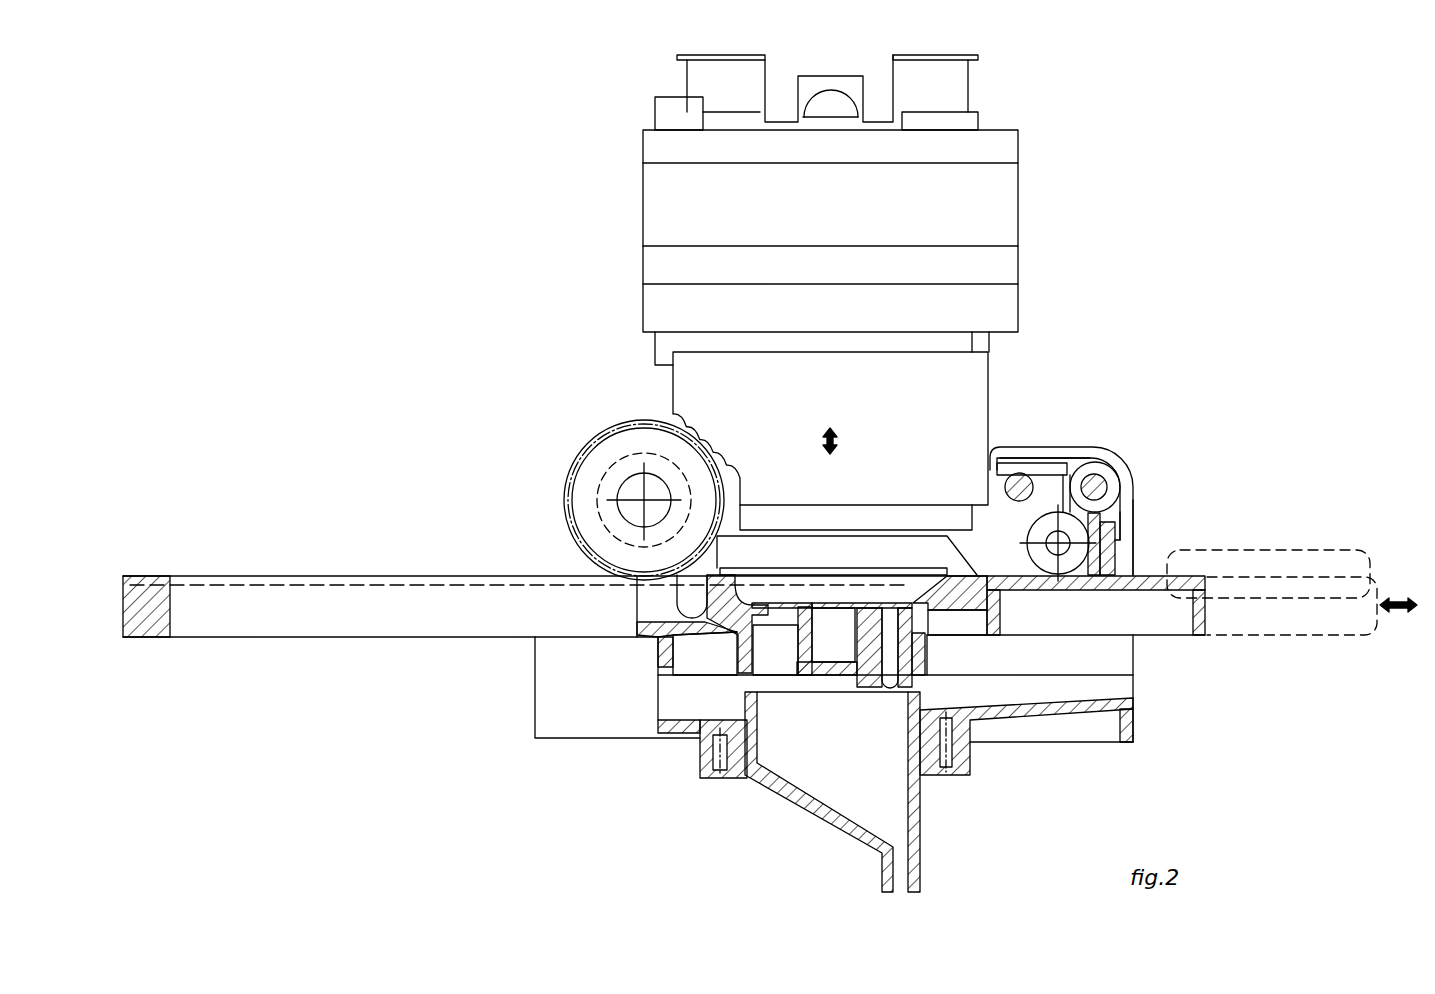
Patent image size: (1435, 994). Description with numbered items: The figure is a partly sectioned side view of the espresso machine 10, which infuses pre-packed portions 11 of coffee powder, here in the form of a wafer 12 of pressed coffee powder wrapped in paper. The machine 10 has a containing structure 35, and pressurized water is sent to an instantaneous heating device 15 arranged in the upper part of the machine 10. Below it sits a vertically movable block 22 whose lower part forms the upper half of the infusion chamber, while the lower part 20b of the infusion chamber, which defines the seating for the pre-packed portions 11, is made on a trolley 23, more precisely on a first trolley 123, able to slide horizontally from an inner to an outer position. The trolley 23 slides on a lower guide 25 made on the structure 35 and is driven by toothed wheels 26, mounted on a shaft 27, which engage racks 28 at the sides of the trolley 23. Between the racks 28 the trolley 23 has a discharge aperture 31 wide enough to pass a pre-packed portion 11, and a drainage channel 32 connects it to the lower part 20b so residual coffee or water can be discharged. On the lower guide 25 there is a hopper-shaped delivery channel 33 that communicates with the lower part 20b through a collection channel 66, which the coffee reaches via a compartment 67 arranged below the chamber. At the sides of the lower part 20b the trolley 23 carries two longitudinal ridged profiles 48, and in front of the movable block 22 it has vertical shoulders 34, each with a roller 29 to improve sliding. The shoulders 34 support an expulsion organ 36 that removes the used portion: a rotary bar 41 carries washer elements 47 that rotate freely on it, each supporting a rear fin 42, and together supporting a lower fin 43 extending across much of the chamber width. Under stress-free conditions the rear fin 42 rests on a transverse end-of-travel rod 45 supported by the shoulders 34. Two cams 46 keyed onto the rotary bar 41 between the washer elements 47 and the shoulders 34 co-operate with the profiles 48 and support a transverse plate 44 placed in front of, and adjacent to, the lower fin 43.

The machine 10 is at (1095, 266).
The instantaneous heating device 15 is at (665, 199).
The containing structure 35 is at (552, 336).
The vertically movable block 22 is at (968, 373).
The toothed wheels 26 is at (621, 428).
The shaft 27 is at (625, 505).
The longitudinal ridged profiles 48 is at (850, 543).
The lower part of the infusion chamber 20b is at (878, 576).
The expulsion organ 36 is at (1088, 447).
The washer elements 47 is at (1062, 456).
The rear fin 42 is at (1031, 465).
The transverse end-of-travel rod 45 is at (1008, 490).
The rotary bar 41 is at (1100, 480).
The cams 46 is at (1118, 505).
The vertical shoulders 34 is at (1133, 530).
The roller 29 is at (1040, 560).
The lower fin 43 is at (1093, 567).
The transverse plate 44 is at (1105, 567).
The discharge aperture 31 is at (370, 603).
The racks 28 is at (250, 582).
The pre-packed portions 11 is at (1240, 548).
The wafer 12 is at (1315, 556).
The trolley 23 is at (1170, 643).
The first trolley 123 is at (1205, 625).
The lower guide 25 is at (598, 727).
The drainage channel 32 is at (645, 600).
The compartment 67 is at (827, 650).
The collection channel 66 is at (887, 688).
The delivery channel 33 is at (810, 807).